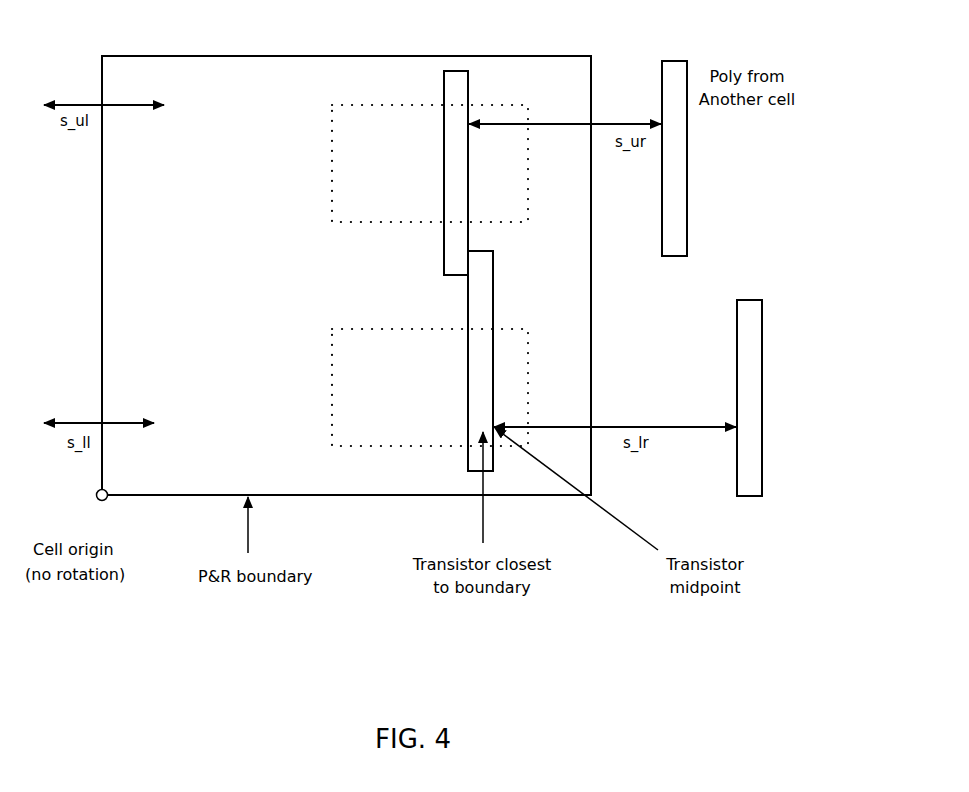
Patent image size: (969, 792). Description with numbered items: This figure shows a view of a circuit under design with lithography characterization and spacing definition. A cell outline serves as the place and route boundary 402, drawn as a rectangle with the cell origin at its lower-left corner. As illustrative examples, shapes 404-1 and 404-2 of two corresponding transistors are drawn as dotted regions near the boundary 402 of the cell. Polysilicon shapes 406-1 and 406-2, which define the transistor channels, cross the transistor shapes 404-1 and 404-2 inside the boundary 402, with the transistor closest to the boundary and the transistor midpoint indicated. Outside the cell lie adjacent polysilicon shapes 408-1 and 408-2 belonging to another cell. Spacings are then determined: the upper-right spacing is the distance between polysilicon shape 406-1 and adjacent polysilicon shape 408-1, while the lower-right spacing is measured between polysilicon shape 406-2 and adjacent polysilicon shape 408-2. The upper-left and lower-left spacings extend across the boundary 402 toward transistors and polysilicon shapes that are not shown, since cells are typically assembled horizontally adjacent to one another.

The place and route boundary 402 is at (222, 495).
The transistor shape 404-1 is at (325, 165).
The transistor shape 404-2 is at (330, 387).
The polysilicon shape 406-1 is at (468, 90).
The polysilicon shape 406-2 is at (493, 298).
The adjacent polysilicon shape 408-1 is at (687, 193).
The adjacent polysilicon shape 408-2 is at (762, 447).